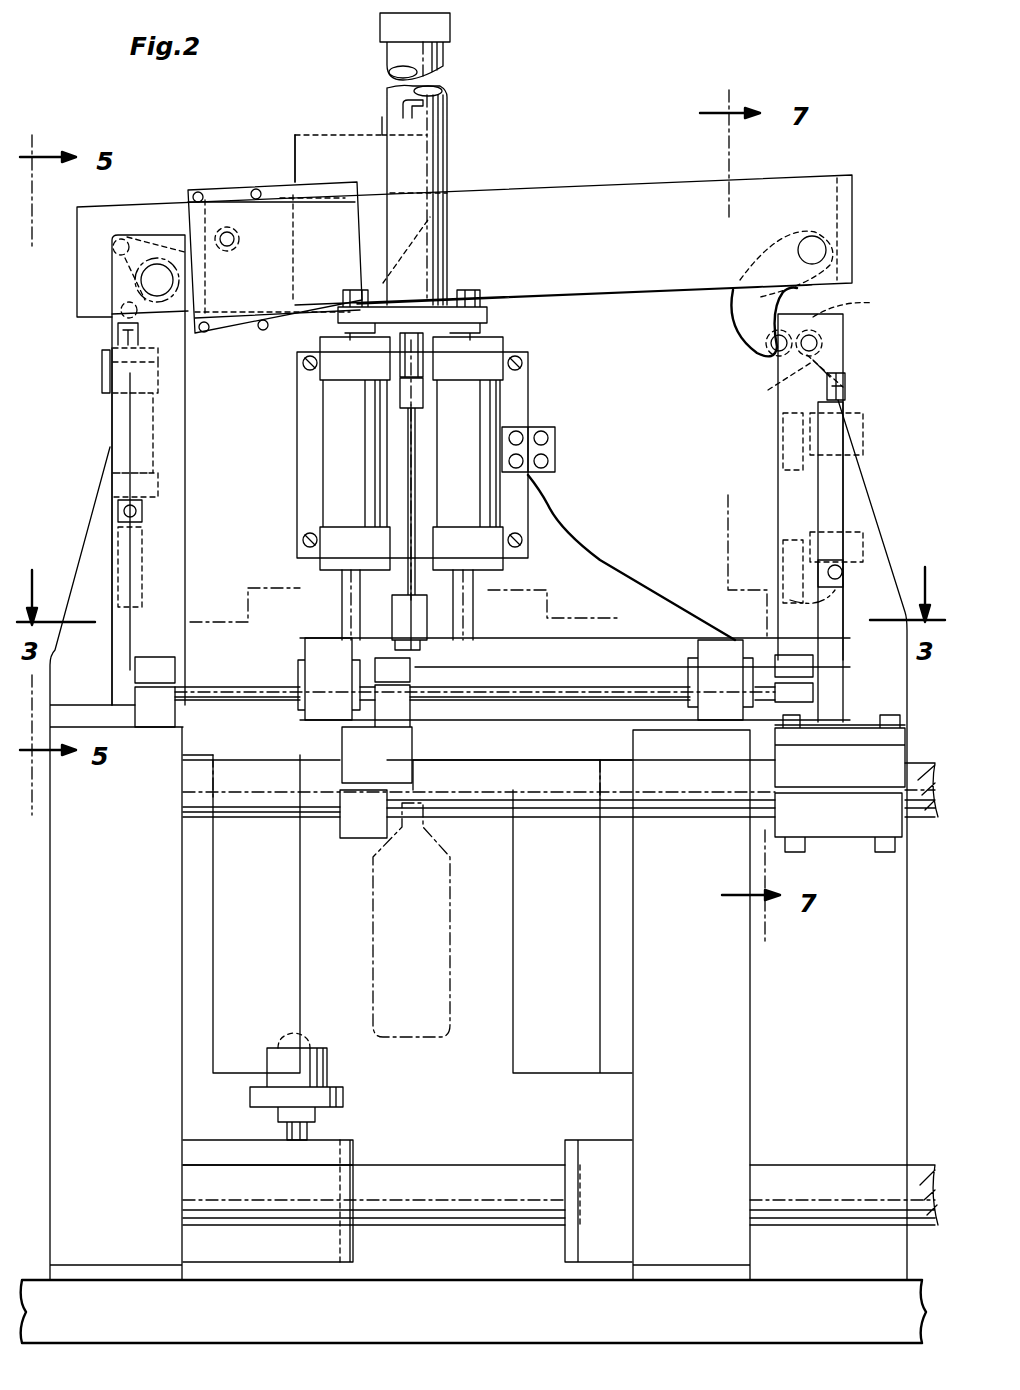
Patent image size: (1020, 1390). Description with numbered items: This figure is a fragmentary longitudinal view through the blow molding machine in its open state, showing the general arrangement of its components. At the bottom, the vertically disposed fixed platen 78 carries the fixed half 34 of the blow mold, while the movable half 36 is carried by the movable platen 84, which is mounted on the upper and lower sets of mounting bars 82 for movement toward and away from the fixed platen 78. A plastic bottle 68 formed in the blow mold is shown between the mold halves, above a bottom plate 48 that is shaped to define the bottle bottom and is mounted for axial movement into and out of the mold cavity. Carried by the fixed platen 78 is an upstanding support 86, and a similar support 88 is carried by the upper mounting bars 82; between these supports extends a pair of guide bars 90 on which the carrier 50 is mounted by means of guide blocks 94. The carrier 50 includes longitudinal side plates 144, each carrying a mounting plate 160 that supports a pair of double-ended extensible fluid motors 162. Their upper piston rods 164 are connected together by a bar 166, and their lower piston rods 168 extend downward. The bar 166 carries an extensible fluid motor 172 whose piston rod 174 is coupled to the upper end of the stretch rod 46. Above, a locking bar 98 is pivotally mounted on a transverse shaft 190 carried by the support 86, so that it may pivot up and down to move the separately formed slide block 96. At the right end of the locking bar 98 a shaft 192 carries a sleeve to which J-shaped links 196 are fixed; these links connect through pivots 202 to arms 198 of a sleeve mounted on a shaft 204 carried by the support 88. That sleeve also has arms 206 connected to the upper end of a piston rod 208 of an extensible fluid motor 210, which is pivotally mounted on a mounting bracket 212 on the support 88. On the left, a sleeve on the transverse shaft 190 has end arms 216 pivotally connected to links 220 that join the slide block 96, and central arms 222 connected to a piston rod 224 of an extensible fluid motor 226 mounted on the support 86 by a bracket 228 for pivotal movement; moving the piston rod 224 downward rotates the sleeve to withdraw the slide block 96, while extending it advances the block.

The fixed half 34 is at (272, 961).
The movable half 36 is at (575, 961).
The stretch rod 46 is at (410, 430).
The bottom plate 48 is at (327, 1072).
The carrier 50 is at (545, 643).
The plastic bottle 68 is at (412, 913).
The fixed platen 78 is at (124, 980).
The mounting bars 82 is at (918, 770).
The movable platen 84 is at (727, 1010).
The upstanding support 86 is at (182, 445).
The support 88 is at (787, 482).
The guide bars 90 is at (612, 662).
The guide blocks 94 is at (318, 698).
The slide block 96 is at (264, 184).
The locking bar 98 is at (625, 197).
The side plates 144 is at (577, 540).
The mounting plate 160 is at (517, 400).
The extensible fluid motors 162 is at (366, 496).
The upper piston rods 164 is at (487, 326).
The bar 166 is at (428, 317).
The piston rods 168 is at (350, 580).
The extensible fluid motor 172 is at (418, 118).
The piston rod 174 is at (420, 360).
The transverse shaft 190 is at (157, 280).
The shaft 192 is at (815, 250).
The J-shaped links 196 is at (743, 312).
The arms 198 is at (860, 308).
The pivots 202 is at (773, 355).
The shaft 204 is at (815, 343).
The arms 206 is at (768, 390).
The piston rod 208 is at (847, 390).
The extensible fluid motor 210 is at (852, 492).
The mounting bracket 212 is at (770, 612).
The arms 216 is at (125, 268).
The links 220 is at (212, 246).
The arms 222 is at (133, 300).
The piston rod 224 is at (125, 342).
The extensible fluid motor 226 is at (112, 428).
The bracket 228 is at (120, 559).